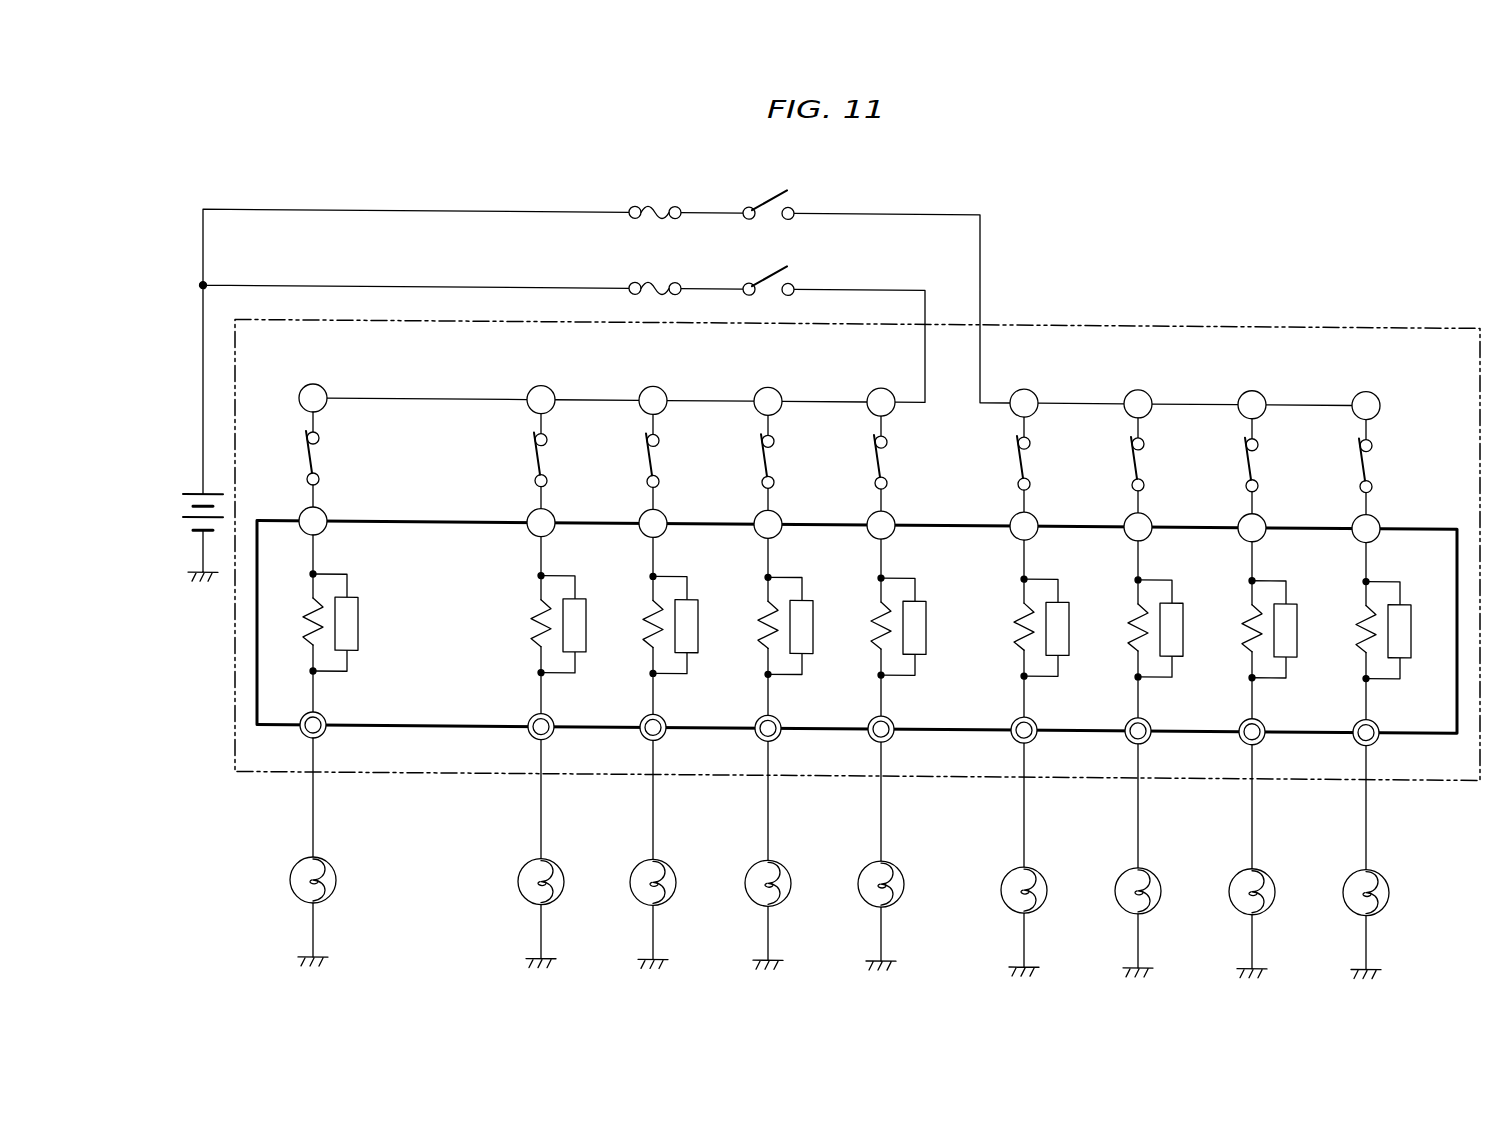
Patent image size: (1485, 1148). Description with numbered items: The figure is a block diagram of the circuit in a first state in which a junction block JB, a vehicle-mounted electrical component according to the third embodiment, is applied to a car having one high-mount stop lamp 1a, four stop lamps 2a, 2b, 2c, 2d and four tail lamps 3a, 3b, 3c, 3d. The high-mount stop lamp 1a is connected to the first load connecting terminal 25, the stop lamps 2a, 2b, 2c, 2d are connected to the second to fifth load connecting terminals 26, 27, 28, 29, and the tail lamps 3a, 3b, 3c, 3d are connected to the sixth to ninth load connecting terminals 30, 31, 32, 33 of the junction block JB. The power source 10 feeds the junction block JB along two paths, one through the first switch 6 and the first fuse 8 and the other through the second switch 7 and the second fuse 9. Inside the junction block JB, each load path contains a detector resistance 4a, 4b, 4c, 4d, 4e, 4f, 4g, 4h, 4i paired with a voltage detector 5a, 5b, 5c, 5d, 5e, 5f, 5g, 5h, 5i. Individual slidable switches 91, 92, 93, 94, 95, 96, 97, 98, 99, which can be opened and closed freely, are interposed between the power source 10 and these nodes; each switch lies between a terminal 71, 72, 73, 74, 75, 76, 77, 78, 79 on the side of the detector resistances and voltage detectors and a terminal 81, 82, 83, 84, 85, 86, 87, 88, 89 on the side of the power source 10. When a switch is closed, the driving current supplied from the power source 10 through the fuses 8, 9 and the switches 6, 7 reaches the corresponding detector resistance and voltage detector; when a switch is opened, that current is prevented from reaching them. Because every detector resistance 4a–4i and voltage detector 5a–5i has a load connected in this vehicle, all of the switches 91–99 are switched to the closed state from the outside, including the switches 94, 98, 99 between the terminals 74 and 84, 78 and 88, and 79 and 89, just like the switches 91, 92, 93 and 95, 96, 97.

The high-mount stop lamp 1a is at (296, 864).
The stop lamp 2a is at (524, 864).
The stop lamp 2b is at (636, 864).
The stop lamp 2c is at (751, 864).
The stop lamp 2d is at (864, 864).
The tail lamp 3a is at (1007, 869).
The tail lamp 3b is at (1121, 869).
The tail lamp 3c is at (1235, 869).
The tail lamp 3d is at (1349, 869).
The detector resistance 4a is at (304, 604).
The detector resistance 4b is at (532, 604).
The detector resistance 4c is at (644, 604).
The detector resistance 4d is at (759, 604).
The detector resistance 4e is at (872, 604).
The detector resistance 4f is at (1015, 604).
The detector resistance 4g is at (1129, 604).
The detector resistance 4h is at (1243, 604).
The detector resistance 4i is at (1357, 604).
The voltage detector 5a is at (349, 596).
The voltage detector 5b is at (577, 596).
The voltage detector 5c is at (689, 596).
The voltage detector 5d is at (804, 596).
The voltage detector 5e is at (917, 596).
The voltage detector 5f is at (1060, 596).
The voltage detector 5g is at (1174, 596).
The voltage detector 5h is at (1288, 596).
The voltage detector 5i is at (1402, 596).
The first switch 6 is at (764, 272).
The second switch 7 is at (764, 196).
The first fuse 8 is at (652, 283).
The second fuse 9 is at (652, 207).
The power source 10 is at (194, 494).
The first load connecting terminal 25 is at (302, 716).
The second load connecting terminal 26 is at (530, 716).
The third load connecting terminal 27 is at (642, 716).
The fourth load connecting terminal 28 is at (757, 716).
The fifth load connecting terminal 29 is at (870, 716).
The sixth load connecting terminal 30 is at (1013, 716).
The seventh load connecting terminal 31 is at (1127, 716).
The eighth load connecting terminal 32 is at (1241, 716).
The ninth load connecting terminal 33 is at (1355, 716).
The terminal 71 is at (303, 512).
The terminal 72 is at (531, 512).
The terminal 73 is at (643, 512).
The terminal 74 is at (758, 512).
The terminal 75 is at (871, 512).
The terminal 76 is at (1014, 512).
The terminal 77 is at (1128, 512).
The terminal 78 is at (1242, 512).
The terminal 79 is at (1356, 512).
The terminal 81 is at (309, 385).
The terminal 82 is at (537, 385).
The terminal 83 is at (649, 385).
The terminal 84 is at (764, 385).
The terminal 85 is at (877, 385).
The terminal 86 is at (1020, 385).
The terminal 87 is at (1134, 385).
The terminal 88 is at (1248, 385).
The terminal 89 is at (1362, 385).
The slidable switch 91 is at (321, 458).
The slidable switch 92 is at (549, 458).
The slidable switch 93 is at (661, 458).
The slidable switch 94 is at (776, 458).
The slidable switch 95 is at (889, 458).
The slidable switch 96 is at (1032, 458).
The slidable switch 97 is at (1146, 458).
The slidable switch 98 is at (1260, 458).
The slidable switch 99 is at (1374, 458).
The junction block JB is at (404, 520).